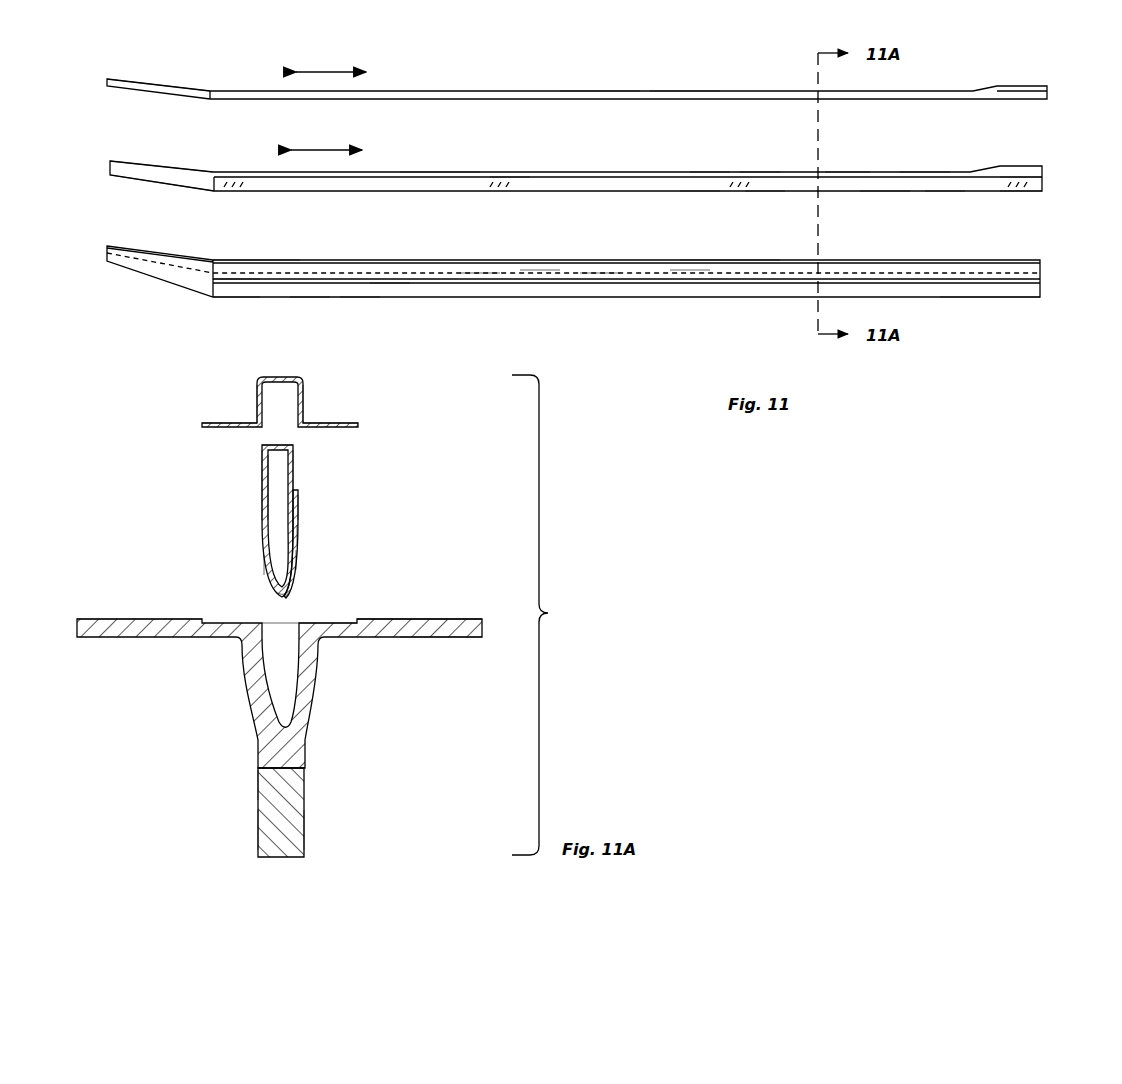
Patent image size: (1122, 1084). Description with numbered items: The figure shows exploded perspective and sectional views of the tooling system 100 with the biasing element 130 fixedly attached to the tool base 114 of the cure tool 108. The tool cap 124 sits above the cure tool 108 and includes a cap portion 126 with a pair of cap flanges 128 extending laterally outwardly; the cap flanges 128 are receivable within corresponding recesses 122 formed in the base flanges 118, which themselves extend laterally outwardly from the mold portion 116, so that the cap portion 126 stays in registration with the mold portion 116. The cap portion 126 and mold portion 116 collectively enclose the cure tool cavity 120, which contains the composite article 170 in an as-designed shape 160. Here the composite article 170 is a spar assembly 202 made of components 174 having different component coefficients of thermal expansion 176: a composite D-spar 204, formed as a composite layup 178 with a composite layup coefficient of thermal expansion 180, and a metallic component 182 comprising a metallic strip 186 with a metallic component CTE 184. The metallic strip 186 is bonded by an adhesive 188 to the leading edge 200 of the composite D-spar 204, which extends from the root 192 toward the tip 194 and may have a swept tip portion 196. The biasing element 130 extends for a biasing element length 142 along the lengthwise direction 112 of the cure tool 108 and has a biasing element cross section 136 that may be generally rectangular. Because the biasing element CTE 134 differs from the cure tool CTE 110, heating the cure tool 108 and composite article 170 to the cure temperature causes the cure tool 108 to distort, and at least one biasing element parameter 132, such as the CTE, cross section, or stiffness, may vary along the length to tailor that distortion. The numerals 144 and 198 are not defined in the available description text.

In FIG. 11, the tooling system 100 is at (216, 56).
In FIG. 11A, the tooling system 100 is at (472, 619).
In FIG. 11, the cure tool 108 is at (432, 273).
In FIG. 11, the cure tool CTE 110 is at (479, 273).
In FIG. 11A, the cure tool CTE 110 is at (455, 637).
In FIG. 11, the lengthwise direction 112 is at (329, 72).
In FIG. 11, the tool base 114 is at (540, 270).
In FIG. 11A, the tool base 114 is at (443, 637).
In FIG. 11, the mold portion 116 is at (688, 270).
In FIG. 11A, the mold portion 116 is at (320, 700).
In FIG. 11, the base flanges 118 is at (722, 260).
In FIG. 11A, the base flanges 118 is at (102, 619).
In FIG. 11, the cure tool cavity 120 is at (602, 273).
In FIG. 11A, the cure tool cavity 120 is at (272, 630).
In FIG. 11A, the recesses 122 is at (350, 618).
In FIG. 11, the tool cap 124 is at (600, 90).
In FIG. 11A, the tool cap 124 is at (278, 377).
In FIG. 11, the cap portion 126 is at (682, 91).
In FIG. 11A, the cap portion 126 is at (258, 400).
In FIG. 11A, the cap flanges 128 is at (209, 423).
In FIG. 11, the biasing element 130 is at (392, 292).
In FIG. 11A, the biasing element 130 is at (305, 793).
In FIG. 11, the biasing element parameter 132 is at (238, 295).
In FIG. 11A, the biasing element parameter 132 is at (305, 833).
In FIG. 11, the biasing element CTE 134 is at (357, 297).
In FIG. 11A, the biasing element CTE 134 is at (262, 788).
In FIG. 11, the biasing element cross section 136 is at (310, 297).
In FIG. 11A, the biasing element cross section 136 is at (262, 832).
In FIG. 11, the biasing element length 142 is at (962, 298).
In FIG. 11, the joint layer 144 is at (213, 286).
In FIG. 11A, the joint layer 144 is at (300, 768).
In FIG. 11, the as-designed shape 160 is at (232, 260).
In FIG. 11, the composite article 170 is at (1024, 167).
In FIG. 11A, the composite article 170 is at (262, 497).
In FIG. 11, the components 174 is at (470, 172).
In FIG. 11A, the components 174 is at (262, 452).
In FIG. 11, the component coefficients of thermal expansion 176 is at (523, 177).
In FIG. 11A, the component coefficients of thermal expansion 176 is at (262, 474).
In FIG. 11, the composite layup 178 is at (712, 172).
In FIG. 11A, the composite layup 178 is at (294, 447).
In FIG. 11, the composite layup coefficient of thermal expansion 180 is at (760, 172).
In FIG. 11A, the composite layup coefficient of thermal expansion 180 is at (296, 470).
In FIG. 11, the metallic component 182 is at (698, 186).
In FIG. 11A, the metallic component 182 is at (298, 515).
In FIG. 11, the metallic component CTE 184 is at (763, 186).
In FIG. 11A, the metallic component CTE 184 is at (298, 537).
In FIG. 11, the metallic strip 186 is at (887, 186).
In FIG. 11A, the metallic strip 186 is at (297, 560).
In FIG. 11, the adhesive 188 is at (942, 184).
In FIG. 11A, the adhesive 188 is at (264, 565).
In FIG. 11, the root 192 is at (1045, 177).
In FIG. 11, the tip 194 is at (110, 164).
In FIG. 11, the swept tip portion 196 is at (122, 176).
In FIG. 11, the direction of probe movement 198 is at (325, 150).
In FIG. 11, the leading edge 200 is at (1015, 192).
In FIG. 11A, the leading edge 200 is at (285, 598).
In FIG. 11, the spar assembly 202 is at (922, 172).
In FIG. 11, the composite D-spar 204 is at (843, 172).